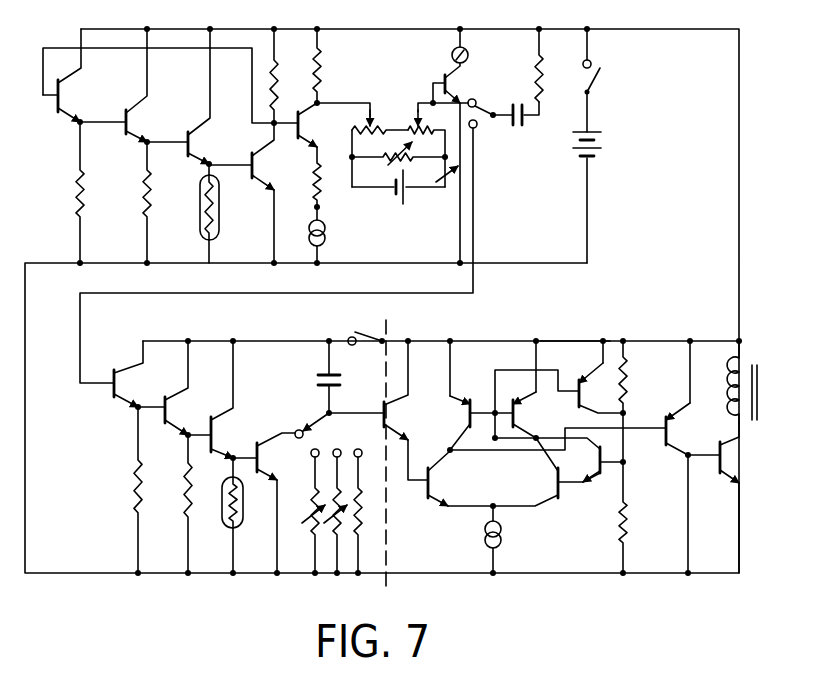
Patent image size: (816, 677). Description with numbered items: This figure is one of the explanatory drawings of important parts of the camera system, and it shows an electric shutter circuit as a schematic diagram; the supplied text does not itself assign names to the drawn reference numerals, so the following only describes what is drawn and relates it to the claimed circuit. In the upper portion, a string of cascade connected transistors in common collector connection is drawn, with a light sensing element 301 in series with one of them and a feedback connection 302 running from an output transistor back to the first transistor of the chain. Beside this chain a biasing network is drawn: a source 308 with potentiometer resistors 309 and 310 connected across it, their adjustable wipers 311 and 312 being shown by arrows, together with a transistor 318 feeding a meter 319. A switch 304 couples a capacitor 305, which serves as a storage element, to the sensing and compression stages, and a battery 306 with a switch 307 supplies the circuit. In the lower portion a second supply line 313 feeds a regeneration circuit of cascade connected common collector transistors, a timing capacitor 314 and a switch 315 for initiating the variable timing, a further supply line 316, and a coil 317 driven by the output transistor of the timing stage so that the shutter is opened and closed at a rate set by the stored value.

The lamp 301 is at (168, 221).
The feedback connection 302 is at (155, 55).
The switch 304 is at (486, 105).
The capacitor 305 is at (516, 126).
The battery 306 is at (605, 197).
The switch 307 is at (607, 80).
The battery 308 is at (398, 198).
The potentiometer 309 is at (380, 156).
The variable resistor 310 is at (403, 156).
The wiper 311 is at (359, 111).
The wiper 312 is at (433, 114).
The supply line 313 is at (281, 327).
The capacitor 314 is at (351, 378).
The switch 315 is at (340, 372).
The supply line 316 is at (585, 327).
The coil 317 is at (758, 382).
The transistor 318 is at (439, 80).
The meter 319 is at (477, 46).